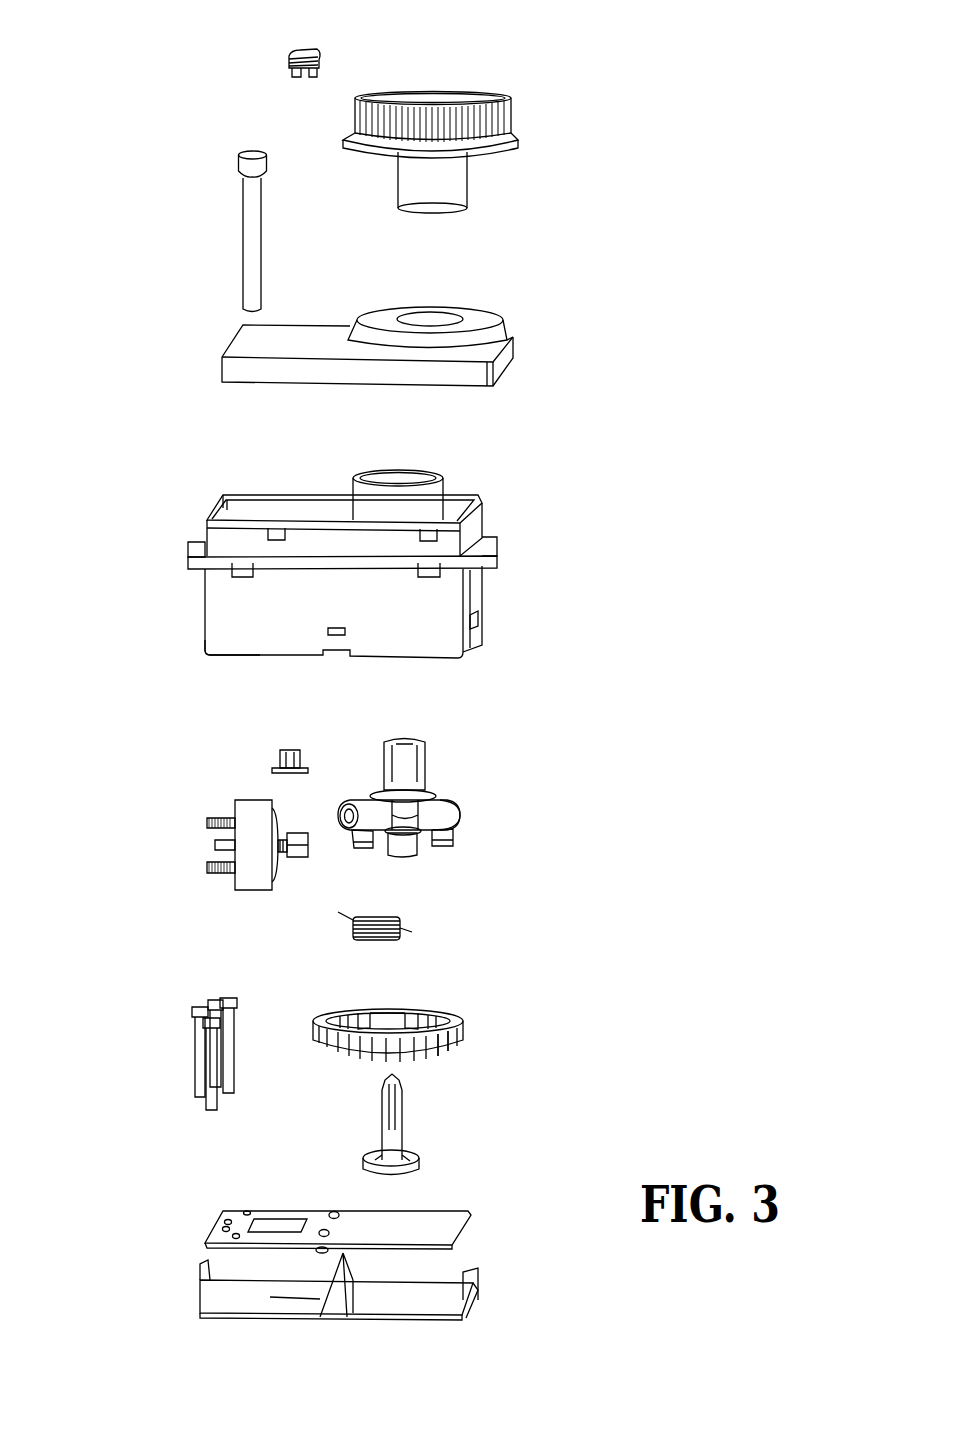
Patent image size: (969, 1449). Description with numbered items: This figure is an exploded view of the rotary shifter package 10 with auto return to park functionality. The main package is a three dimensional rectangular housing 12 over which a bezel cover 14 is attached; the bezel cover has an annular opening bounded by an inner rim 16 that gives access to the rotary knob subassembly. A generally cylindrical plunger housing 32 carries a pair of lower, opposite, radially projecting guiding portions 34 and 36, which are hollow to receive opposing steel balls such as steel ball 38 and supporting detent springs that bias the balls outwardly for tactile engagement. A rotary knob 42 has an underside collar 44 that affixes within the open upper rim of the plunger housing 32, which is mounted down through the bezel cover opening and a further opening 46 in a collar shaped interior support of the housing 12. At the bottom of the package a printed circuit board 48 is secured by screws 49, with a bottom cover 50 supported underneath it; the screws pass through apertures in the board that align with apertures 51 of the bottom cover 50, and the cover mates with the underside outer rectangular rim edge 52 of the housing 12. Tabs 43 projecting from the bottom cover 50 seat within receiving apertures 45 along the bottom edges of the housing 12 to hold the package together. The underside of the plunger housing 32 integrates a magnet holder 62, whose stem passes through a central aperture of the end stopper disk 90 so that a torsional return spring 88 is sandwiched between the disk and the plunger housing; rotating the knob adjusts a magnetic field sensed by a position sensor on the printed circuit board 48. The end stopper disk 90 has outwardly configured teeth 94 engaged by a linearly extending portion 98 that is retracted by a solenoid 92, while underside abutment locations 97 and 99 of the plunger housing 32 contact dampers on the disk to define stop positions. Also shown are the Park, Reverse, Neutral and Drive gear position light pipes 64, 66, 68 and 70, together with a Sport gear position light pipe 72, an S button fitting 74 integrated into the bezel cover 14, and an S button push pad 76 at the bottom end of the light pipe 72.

The rotary shifter package 10 is at (657, 208).
The main package housing 12 is at (483, 585).
The bezel cover 14 is at (303, 340).
The inner rim 16 is at (445, 320).
The plunger housing 32 is at (425, 780).
The radial projecting guiding portion 34 is at (368, 808).
The radial projecting guiding portion 36 is at (452, 822).
The steel ball 38 is at (343, 812).
The rotary knob 42 is at (430, 98).
The tab 43 is at (350, 1265).
The underside collar 44 is at (460, 178).
The receiving aperture 45 is at (337, 627).
The opening 46 is at (410, 478).
The printed circuit board 48 is at (225, 1212).
The screw 49 is at (323, 1232).
The bottom cover 50 is at (367, 1322).
The aperture 51 is at (300, 1300).
The underside outer rectangular rim edge 52 is at (227, 655).
The magnet holder 62 is at (402, 1132).
The Park gear position light pipe 64 is at (200, 1002).
The Reverse gear position light pipe 66 is at (214, 1054).
The Neutral gear position light pipe 68 is at (214, 1054).
The Drive gear position light pipe 70 is at (214, 1054).
The Sport gear position light pipe 72 is at (257, 205).
The S button fitting 74 is at (300, 50).
The S button push pad 76 is at (285, 750).
The torsional return spring 88 is at (385, 940).
The end stopper disk 90 is at (465, 1028).
The solenoid 92 is at (215, 845).
The teeth 94 is at (443, 1040).
The underside abutment location 97 is at (360, 838).
The linearly extending portion 98 is at (297, 860).
The underside abutment location 99 is at (450, 838).